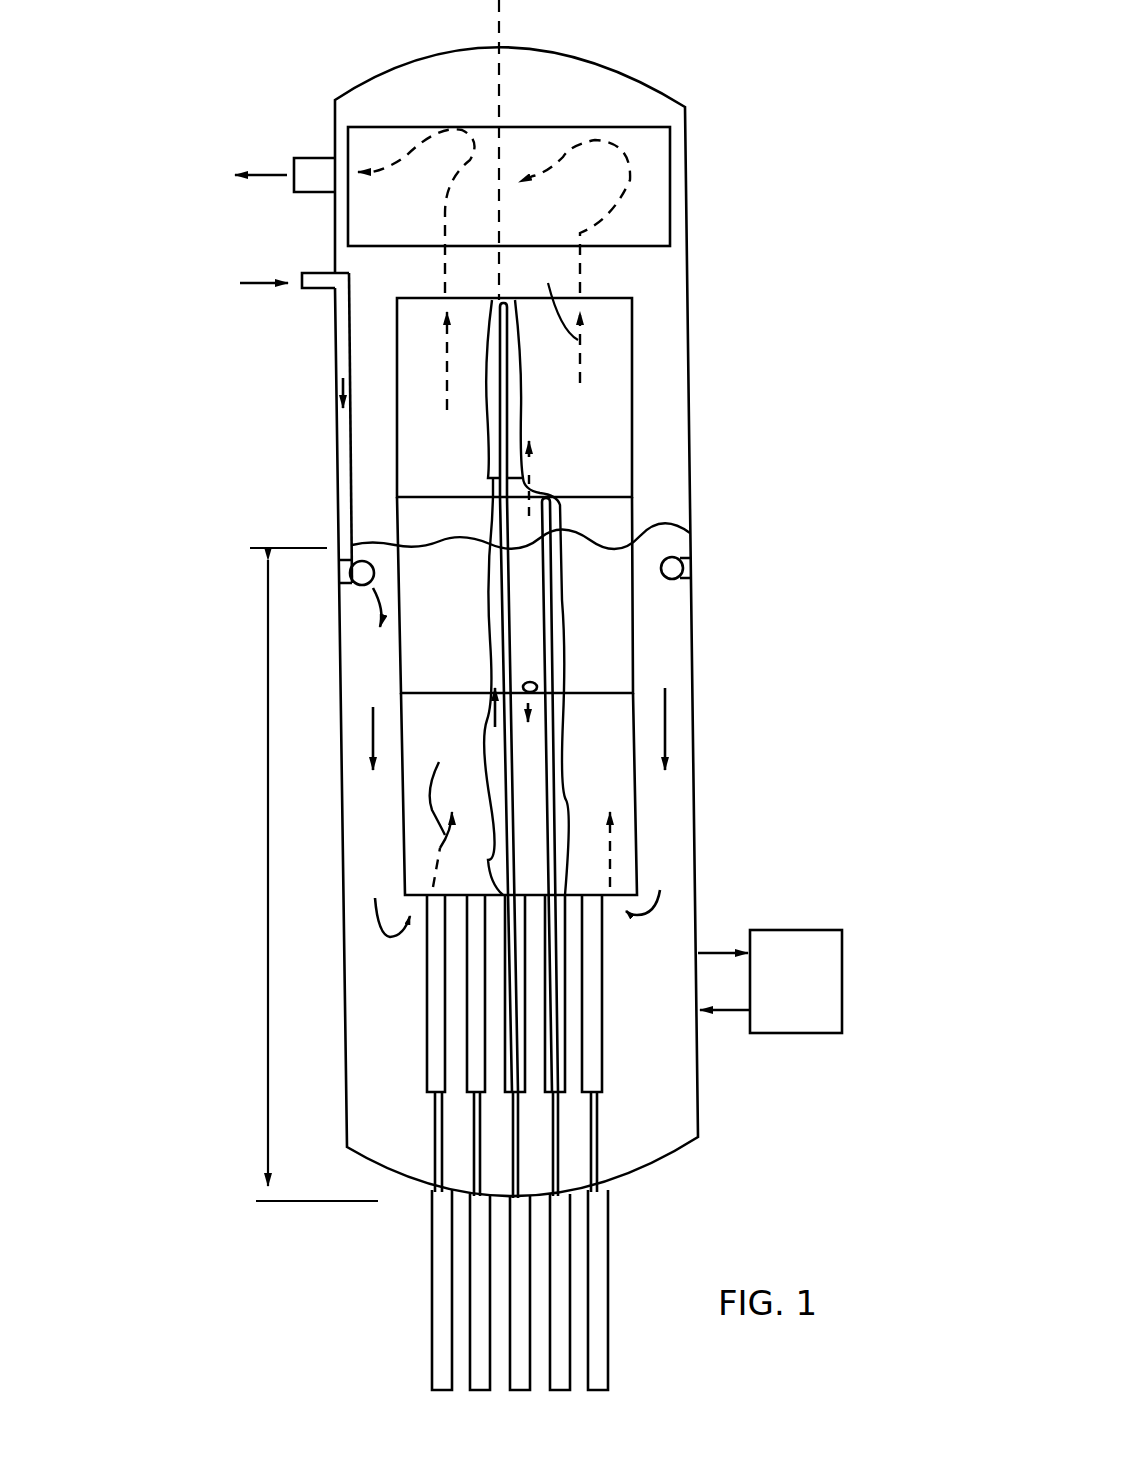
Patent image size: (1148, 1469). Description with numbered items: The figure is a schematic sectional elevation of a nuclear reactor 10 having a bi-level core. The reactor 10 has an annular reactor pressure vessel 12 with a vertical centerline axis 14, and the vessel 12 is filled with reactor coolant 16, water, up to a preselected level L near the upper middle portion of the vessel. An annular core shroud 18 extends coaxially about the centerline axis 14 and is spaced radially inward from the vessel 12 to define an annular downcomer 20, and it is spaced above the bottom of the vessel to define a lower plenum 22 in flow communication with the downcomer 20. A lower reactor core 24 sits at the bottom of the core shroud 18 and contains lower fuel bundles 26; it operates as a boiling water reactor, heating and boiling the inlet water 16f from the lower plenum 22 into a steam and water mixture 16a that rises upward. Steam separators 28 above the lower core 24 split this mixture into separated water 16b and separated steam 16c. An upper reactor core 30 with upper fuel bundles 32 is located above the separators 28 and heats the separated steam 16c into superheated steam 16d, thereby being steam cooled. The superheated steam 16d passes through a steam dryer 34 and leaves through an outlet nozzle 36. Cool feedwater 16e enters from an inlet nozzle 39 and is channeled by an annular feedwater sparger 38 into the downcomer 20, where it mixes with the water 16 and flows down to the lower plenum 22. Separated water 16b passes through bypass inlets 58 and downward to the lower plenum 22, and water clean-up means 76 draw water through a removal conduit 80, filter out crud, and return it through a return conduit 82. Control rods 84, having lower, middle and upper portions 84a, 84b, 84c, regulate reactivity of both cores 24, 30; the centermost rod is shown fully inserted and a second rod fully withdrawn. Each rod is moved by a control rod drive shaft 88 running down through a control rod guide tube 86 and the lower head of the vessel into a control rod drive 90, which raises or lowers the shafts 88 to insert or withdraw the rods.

The nuclear reactor 10 is at (690, 397).
The reactor pressure vessel 12 is at (336, 457).
The centerline axis 14 is at (499, 12).
The reactor coolant 16 is at (667, 533).
The steam and water mixture 16a is at (495, 714).
The separated water 16b is at (529, 703).
The separated steam 16c is at (532, 455).
The superheated steam 16d is at (578, 278).
The feedwater 16e is at (373, 615).
The inlet water 16f is at (391, 940).
The core shroud 18 is at (640, 840).
The downcomer 20 is at (360, 859).
The lower plenum 22 is at (675, 1103).
The lower reactor core 24 is at (627, 751).
The lower fuel bundles 26 is at (557, 741).
The steam separators 28 is at (612, 606).
The upper reactor core 30 is at (612, 380).
The upper fuel bundles 32 is at (495, 405).
The steam dryer 34 is at (670, 168).
The outlet nozzle 36 is at (306, 158).
The feedwater sparger 38 is at (363, 586).
The inlet nozzle 39 is at (320, 272).
The bypass inlets 58 is at (533, 681).
The water clean-up means 76 is at (820, 1002).
The removal conduit 80 is at (717, 950).
The return conduit 82 is at (727, 1013).
The control rods 84 is at (500, 593).
The lower portion of control rod 84a is at (502, 846).
The middle portion of control rod 84b is at (500, 638).
The upper portion of control rod 84c is at (505, 396).
The control rod guide tube 86 is at (433, 1037).
The control rod drive shaft 88 is at (434, 1132).
The control rod drive 90 is at (439, 1305).
The preselected level L is at (265, 755).